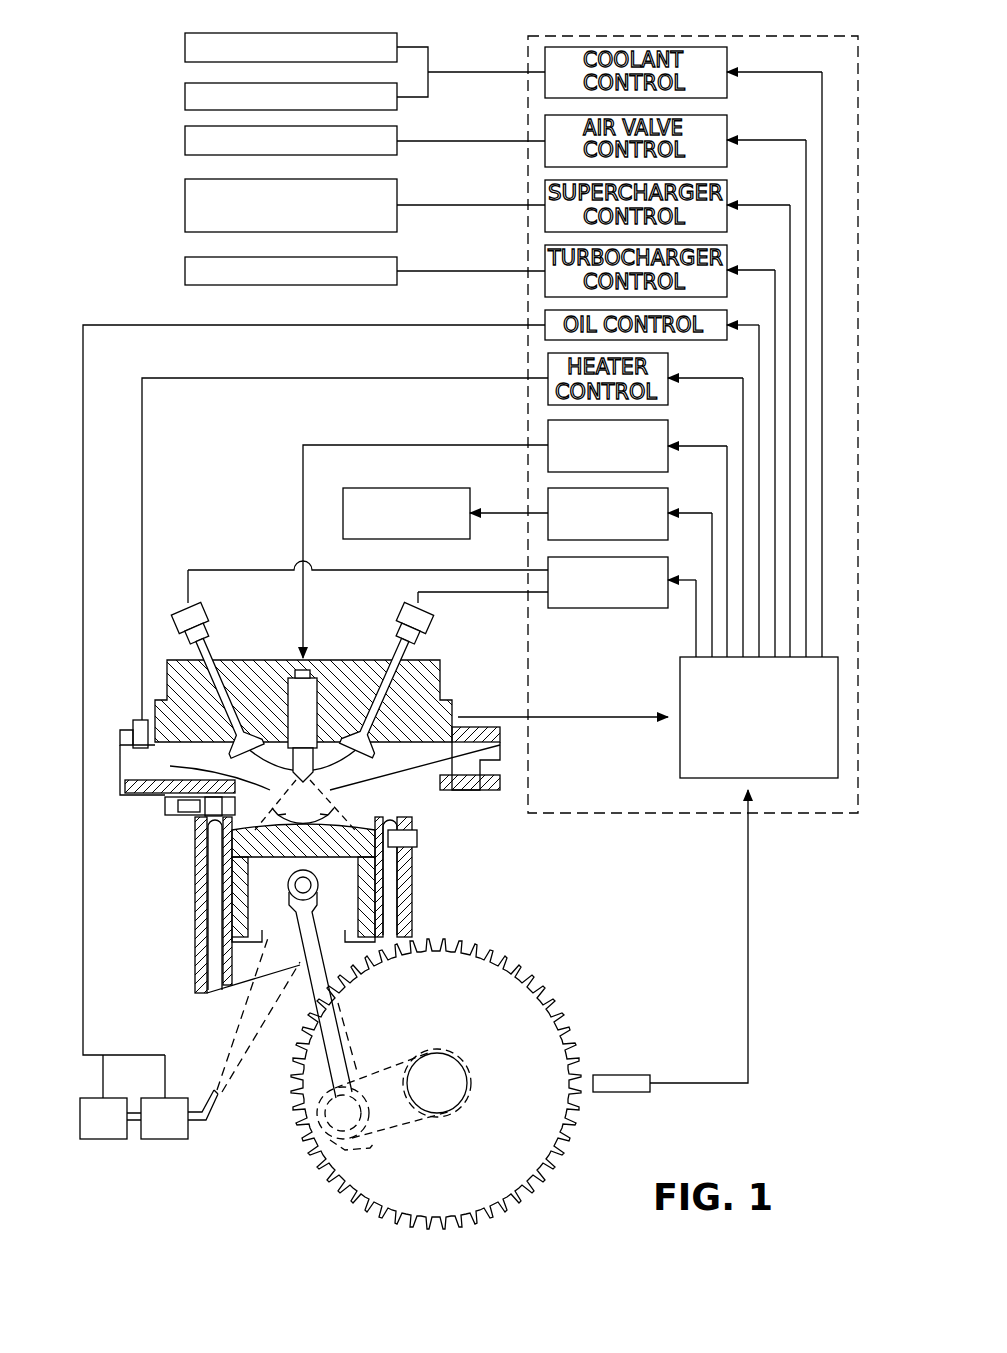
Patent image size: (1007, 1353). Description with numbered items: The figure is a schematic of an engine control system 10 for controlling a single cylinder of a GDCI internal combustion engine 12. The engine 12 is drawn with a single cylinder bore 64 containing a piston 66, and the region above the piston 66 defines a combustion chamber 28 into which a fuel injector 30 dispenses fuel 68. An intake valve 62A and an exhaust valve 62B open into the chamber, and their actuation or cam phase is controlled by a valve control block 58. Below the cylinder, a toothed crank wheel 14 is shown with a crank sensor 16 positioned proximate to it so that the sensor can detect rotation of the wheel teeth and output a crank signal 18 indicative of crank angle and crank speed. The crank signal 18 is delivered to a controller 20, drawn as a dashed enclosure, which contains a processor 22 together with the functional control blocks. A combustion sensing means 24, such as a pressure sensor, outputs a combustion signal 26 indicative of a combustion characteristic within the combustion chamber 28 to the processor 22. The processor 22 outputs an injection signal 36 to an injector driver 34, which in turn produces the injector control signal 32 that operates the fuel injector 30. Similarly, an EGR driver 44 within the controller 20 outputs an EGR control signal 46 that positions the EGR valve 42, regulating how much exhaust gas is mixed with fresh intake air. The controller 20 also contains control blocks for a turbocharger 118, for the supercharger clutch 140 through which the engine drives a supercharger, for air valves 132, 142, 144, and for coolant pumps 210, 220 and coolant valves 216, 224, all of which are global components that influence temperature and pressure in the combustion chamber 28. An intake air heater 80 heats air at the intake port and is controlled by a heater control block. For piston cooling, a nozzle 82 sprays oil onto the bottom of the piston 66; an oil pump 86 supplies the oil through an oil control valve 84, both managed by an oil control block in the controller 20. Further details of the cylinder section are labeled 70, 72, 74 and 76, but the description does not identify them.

The engine control system 10 is at (185, 468).
The GDCI internal combustion engine 12 is at (548, 930).
The toothed crank wheel 14 is at (557, 1005).
The crank sensor 16 is at (620, 1092).
The crank signal 18 is at (748, 1015).
The controller 20 is at (800, 813).
The processor 22 is at (690, 657).
The combustion sensing means 24 is at (430, 812).
The combustion signal 26 is at (512, 715).
The combustion chamber 28 is at (333, 727).
The fuel injector 30 is at (290, 690).
The injector control signal 32 is at (300, 495).
The injector driver 34 is at (560, 420).
The injection signal 36 is at (715, 446).
The EGR valve 42 is at (430, 496).
The EGR driver 44 is at (560, 488).
The EGR control signal 46 is at (343, 510).
The valve control block 58 is at (560, 557).
The intake valve 62A is at (210, 648).
The exhaust valve 62B is at (398, 652).
The cylinder bore 64 is at (700, 513).
The piston 66 is at (368, 908).
The fuel 68 is at (170, 766).
The piston 70 is at (250, 832).
The sensor 72 is at (370, 855).
The sensor passage 74 is at (252, 820).
The head gasket sensor 76 is at (185, 808).
The intake air heater 80 is at (133, 722).
The nozzle 82 is at (215, 1105).
The oil control valve 84 is at (157, 1118).
The oil pump 86 is at (103, 1118).
The turbocharger 118 is at (190, 257).
The air bypass valve 132 is at (239, 126).
The supercharger clutch 140 is at (190, 179).
The air bypass valve 142 is at (239, 126).
The second charge air cooler bypass valve 144 is at (190, 126).
The coolant pump 210 is at (242, 84).
The coolant valve 216 is at (240, 36).
The coolant pump 220 is at (190, 83).
The coolant valve 224 is at (190, 33).